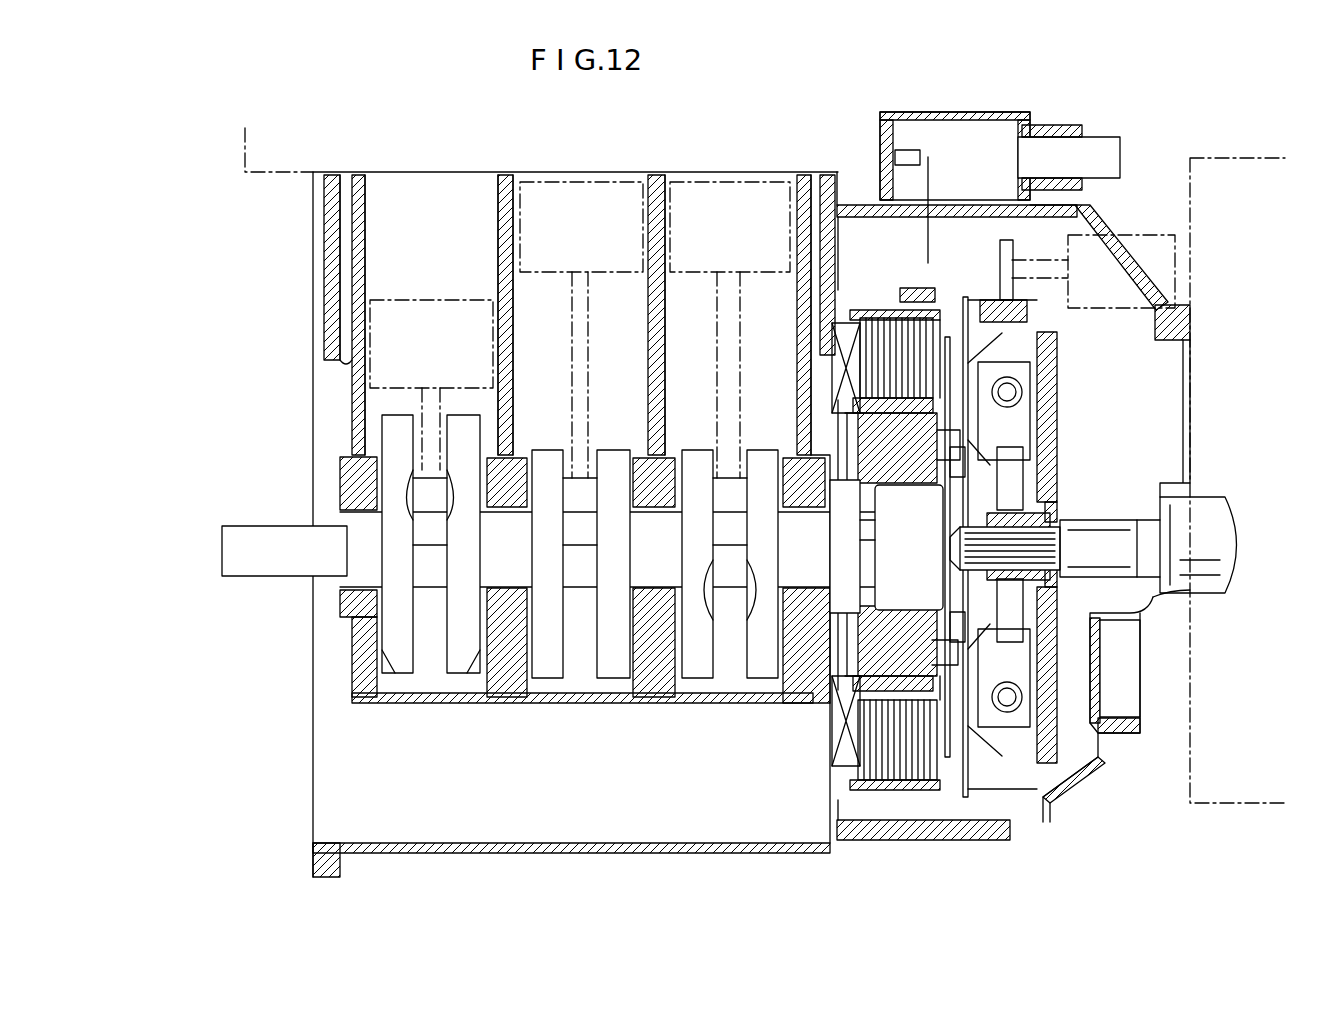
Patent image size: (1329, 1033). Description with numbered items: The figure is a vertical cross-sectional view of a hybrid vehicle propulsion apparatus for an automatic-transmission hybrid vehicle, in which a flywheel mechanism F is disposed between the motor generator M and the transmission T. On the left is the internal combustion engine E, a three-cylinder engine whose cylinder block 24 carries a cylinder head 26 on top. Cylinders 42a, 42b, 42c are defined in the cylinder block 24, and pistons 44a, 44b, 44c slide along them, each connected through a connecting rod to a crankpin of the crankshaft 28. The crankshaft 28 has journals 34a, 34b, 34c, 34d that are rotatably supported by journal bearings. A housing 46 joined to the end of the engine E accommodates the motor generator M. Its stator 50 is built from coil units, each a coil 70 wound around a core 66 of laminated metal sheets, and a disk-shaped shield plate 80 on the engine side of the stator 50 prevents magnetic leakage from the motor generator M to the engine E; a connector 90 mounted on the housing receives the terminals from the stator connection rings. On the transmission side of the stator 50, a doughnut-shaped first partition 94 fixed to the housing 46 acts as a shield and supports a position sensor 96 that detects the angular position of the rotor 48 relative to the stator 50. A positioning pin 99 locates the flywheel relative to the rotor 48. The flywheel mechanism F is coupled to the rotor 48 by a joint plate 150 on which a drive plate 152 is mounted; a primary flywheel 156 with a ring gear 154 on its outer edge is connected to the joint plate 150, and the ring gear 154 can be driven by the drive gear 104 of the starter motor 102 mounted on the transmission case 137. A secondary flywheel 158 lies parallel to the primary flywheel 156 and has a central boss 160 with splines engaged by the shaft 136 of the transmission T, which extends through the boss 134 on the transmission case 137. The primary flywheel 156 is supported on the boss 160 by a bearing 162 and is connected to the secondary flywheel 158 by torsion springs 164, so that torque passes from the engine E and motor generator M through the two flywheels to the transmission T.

The internal combustion engine E is at (308, 803).
The motor generator M is at (863, 797).
The flywheel mechanism F is at (1065, 737).
The transmission T is at (1262, 158).
The cylinder block 24 is at (345, 360).
The cylinder head 26 is at (245, 162).
The crankshaft 28 is at (255, 533).
The journal 34a is at (368, 560).
The journal 34b is at (512, 550).
The journal 34c is at (657, 553).
The journal 34d is at (803, 543).
The cylinder 42a is at (412, 195).
The cylinder 42b is at (537, 293).
The cylinder 42c is at (683, 300).
The piston 44a is at (420, 310).
The piston 44b is at (580, 193).
The piston 44c is at (720, 193).
The housing 46 is at (860, 200).
The rotor 48 is at (843, 443).
The stator 50 is at (903, 785).
The core 66 is at (887, 757).
The coil 70 is at (860, 735).
The shield plate 80 is at (833, 380).
The connector 90 is at (1018, 115).
The first partition 94 is at (1025, 230).
The position sensor 96 is at (933, 290).
The positioning pin 99 is at (910, 490).
The starter motor 102 is at (1172, 233).
The drive gear 104 is at (1050, 225).
The boss 134 is at (1218, 510).
The shaft 136 is at (1222, 538).
The transmission case 137 is at (1085, 225).
The joint plate 150 is at (1057, 420).
The drive plate 152 is at (1060, 300).
The ring gear 154 is at (1160, 312).
The primary flywheel 156 is at (1057, 337).
The secondary flywheel 158 is at (1057, 367).
The central boss 160 is at (1195, 495).
The bearing 162 is at (1057, 457).
The torsion springs 164 is at (1057, 390).